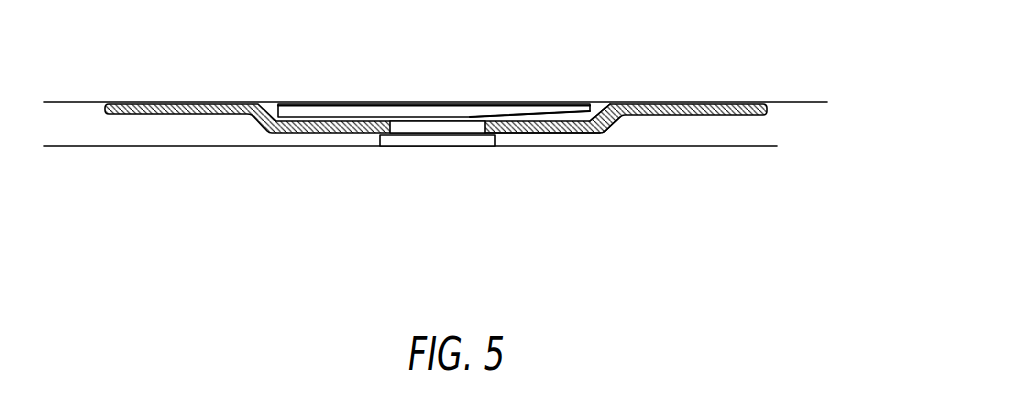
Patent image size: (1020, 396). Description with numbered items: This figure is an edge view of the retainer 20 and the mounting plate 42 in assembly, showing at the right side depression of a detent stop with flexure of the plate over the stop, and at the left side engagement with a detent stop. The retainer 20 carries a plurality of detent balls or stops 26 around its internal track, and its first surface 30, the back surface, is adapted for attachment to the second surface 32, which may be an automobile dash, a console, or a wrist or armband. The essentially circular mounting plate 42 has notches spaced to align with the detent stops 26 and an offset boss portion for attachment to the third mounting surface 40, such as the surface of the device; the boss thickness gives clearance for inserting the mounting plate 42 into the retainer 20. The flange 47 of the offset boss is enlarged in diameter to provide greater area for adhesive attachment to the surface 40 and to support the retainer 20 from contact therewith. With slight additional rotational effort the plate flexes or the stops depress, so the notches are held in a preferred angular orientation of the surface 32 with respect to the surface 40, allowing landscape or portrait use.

The retainer 20 is at (612, 125).
The detent stops 26 is at (602, 134).
The first surface 30 is at (189, 103).
The second surface 32 is at (792, 103).
The third mounting surface 40 is at (735, 146).
The mounting plate 42 is at (415, 103).
The flange 47 is at (378, 139).